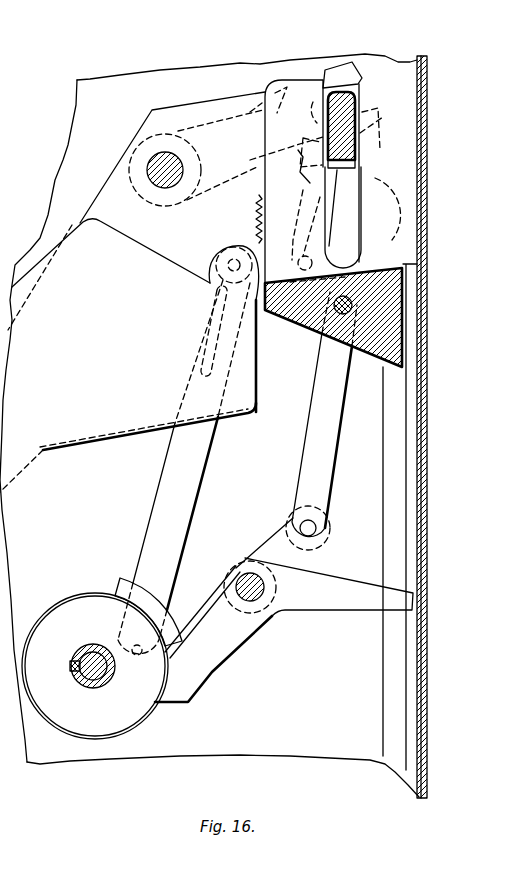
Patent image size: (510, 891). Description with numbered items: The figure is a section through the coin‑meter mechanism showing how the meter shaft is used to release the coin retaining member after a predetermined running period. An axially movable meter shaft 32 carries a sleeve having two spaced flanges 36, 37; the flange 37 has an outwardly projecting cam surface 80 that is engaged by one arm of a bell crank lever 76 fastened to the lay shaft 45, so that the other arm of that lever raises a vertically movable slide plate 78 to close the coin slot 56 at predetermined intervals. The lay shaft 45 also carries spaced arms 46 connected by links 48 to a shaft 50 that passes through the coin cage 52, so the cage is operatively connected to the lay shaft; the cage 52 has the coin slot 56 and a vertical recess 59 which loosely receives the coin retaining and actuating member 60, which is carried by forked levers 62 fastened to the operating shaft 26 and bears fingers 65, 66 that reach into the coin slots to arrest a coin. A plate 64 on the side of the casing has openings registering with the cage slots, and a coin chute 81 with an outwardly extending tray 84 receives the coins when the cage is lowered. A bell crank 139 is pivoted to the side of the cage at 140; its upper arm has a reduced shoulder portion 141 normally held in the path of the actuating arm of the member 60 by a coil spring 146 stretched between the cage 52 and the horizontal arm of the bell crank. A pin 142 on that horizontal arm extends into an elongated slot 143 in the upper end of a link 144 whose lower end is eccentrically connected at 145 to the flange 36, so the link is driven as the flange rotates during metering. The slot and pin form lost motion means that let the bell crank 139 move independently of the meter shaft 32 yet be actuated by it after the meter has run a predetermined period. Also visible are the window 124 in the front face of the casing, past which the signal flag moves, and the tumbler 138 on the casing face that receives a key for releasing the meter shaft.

The plate 64 is at (401, 54).
The forked levers 62 is at (210, 118).
The operating shaft 26 is at (184, 165).
The coin retaining and actuating member 60 is at (357, 110).
The finger 66 is at (379, 122).
The reduced shoulder portion 141 is at (357, 164).
The coil spring 146 is at (256, 220).
The finger 65 is at (295, 174).
The pivot 140 is at (304, 255).
The slot or recess 59 is at (362, 198).
The coin slot 56 is at (383, 262).
The pin 142 is at (226, 256).
The bell crank 139 is at (210, 286).
The elongated slot 143 is at (200, 338).
The shaft or rod 50 is at (318, 326).
The coin cage 52 is at (356, 362).
The slide plate 78 is at (405, 420).
The tray 84 is at (137, 427).
The coin chute 81 is at (30, 463).
The link 144 is at (200, 472).
The eccentric connection 145 is at (132, 645).
The links 48 is at (330, 470).
The collars or arms 46 is at (314, 545).
The flange 36 is at (78, 598).
The flange or disc 37 is at (127, 728).
The meter shaft 32 is at (86, 678).
The cam surface 80 is at (170, 626).
The lay shaft 45 is at (256, 602).
The bell crank lever 76 is at (220, 668).
The window 124 is at (38, 421).
The tumbler 138 is at (209, 778).